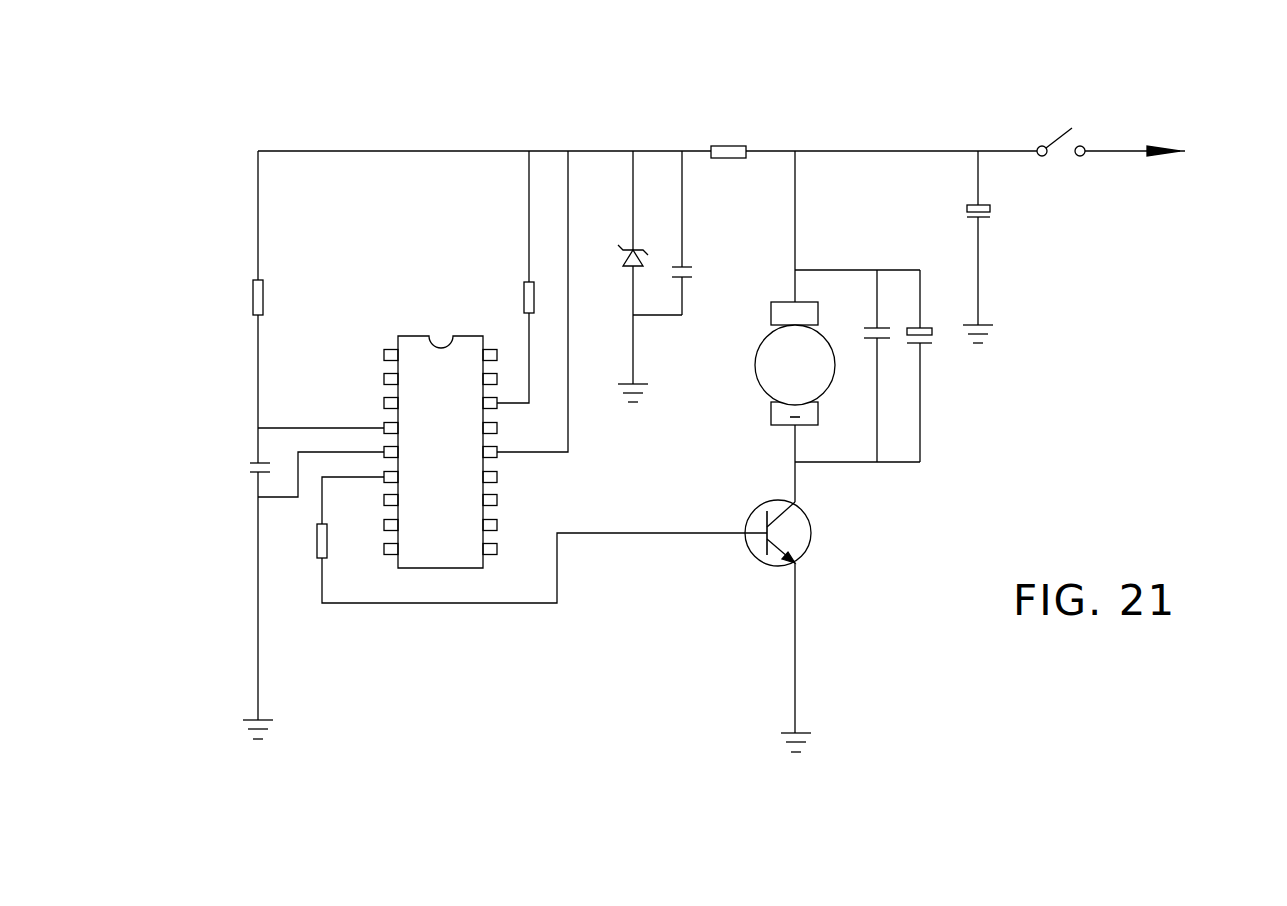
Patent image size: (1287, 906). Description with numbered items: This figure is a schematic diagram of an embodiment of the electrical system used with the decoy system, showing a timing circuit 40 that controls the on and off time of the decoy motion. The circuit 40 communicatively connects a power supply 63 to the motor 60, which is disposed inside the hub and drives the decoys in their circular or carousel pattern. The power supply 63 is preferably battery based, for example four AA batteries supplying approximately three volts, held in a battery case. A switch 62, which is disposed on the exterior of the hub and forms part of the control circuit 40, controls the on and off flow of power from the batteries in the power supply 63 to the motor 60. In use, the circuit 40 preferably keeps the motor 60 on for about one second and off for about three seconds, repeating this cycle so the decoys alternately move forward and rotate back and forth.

The timing circuit 40 is at (180, 101).
The motor 60 is at (1056, 363).
The switch 62 is at (1062, 166).
The power supply 63 is at (1238, 176).